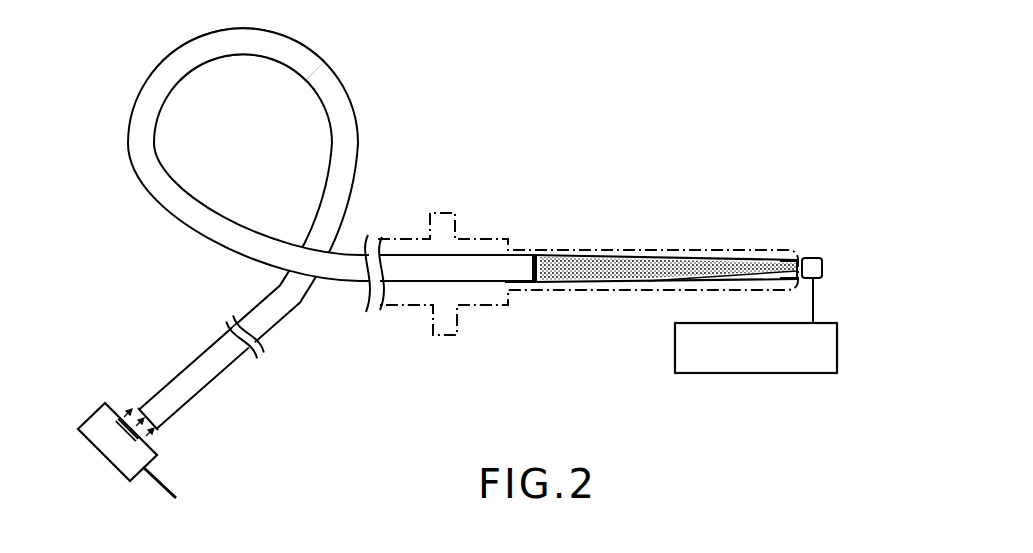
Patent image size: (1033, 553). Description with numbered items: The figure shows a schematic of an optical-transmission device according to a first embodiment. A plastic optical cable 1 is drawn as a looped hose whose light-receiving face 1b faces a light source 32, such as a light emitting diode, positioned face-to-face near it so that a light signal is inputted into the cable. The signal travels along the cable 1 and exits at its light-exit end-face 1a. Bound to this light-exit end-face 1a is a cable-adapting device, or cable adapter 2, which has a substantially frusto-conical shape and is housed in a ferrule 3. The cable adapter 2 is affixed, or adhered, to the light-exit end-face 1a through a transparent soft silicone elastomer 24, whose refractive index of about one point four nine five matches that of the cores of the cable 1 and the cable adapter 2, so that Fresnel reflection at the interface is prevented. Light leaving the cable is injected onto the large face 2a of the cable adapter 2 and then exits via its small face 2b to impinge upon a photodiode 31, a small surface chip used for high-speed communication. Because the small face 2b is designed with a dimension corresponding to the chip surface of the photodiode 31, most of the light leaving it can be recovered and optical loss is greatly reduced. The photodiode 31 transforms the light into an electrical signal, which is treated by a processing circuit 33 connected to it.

The plastic optical cable 1 is at (353, 93).
The light-exit end-face 1a is at (530, 280).
The light-receiving face 1b is at (154, 414).
The cable-adapting device 2 is at (645, 288).
The large face 2a is at (556, 283).
The small face 2b is at (780, 258).
The ferrule 3 is at (618, 248).
The transparent soft silicone elastomer 24 is at (537, 259).
The photodiode 31 is at (813, 257).
The light source 32 is at (98, 423).
The processing circuit 33 is at (837, 343).